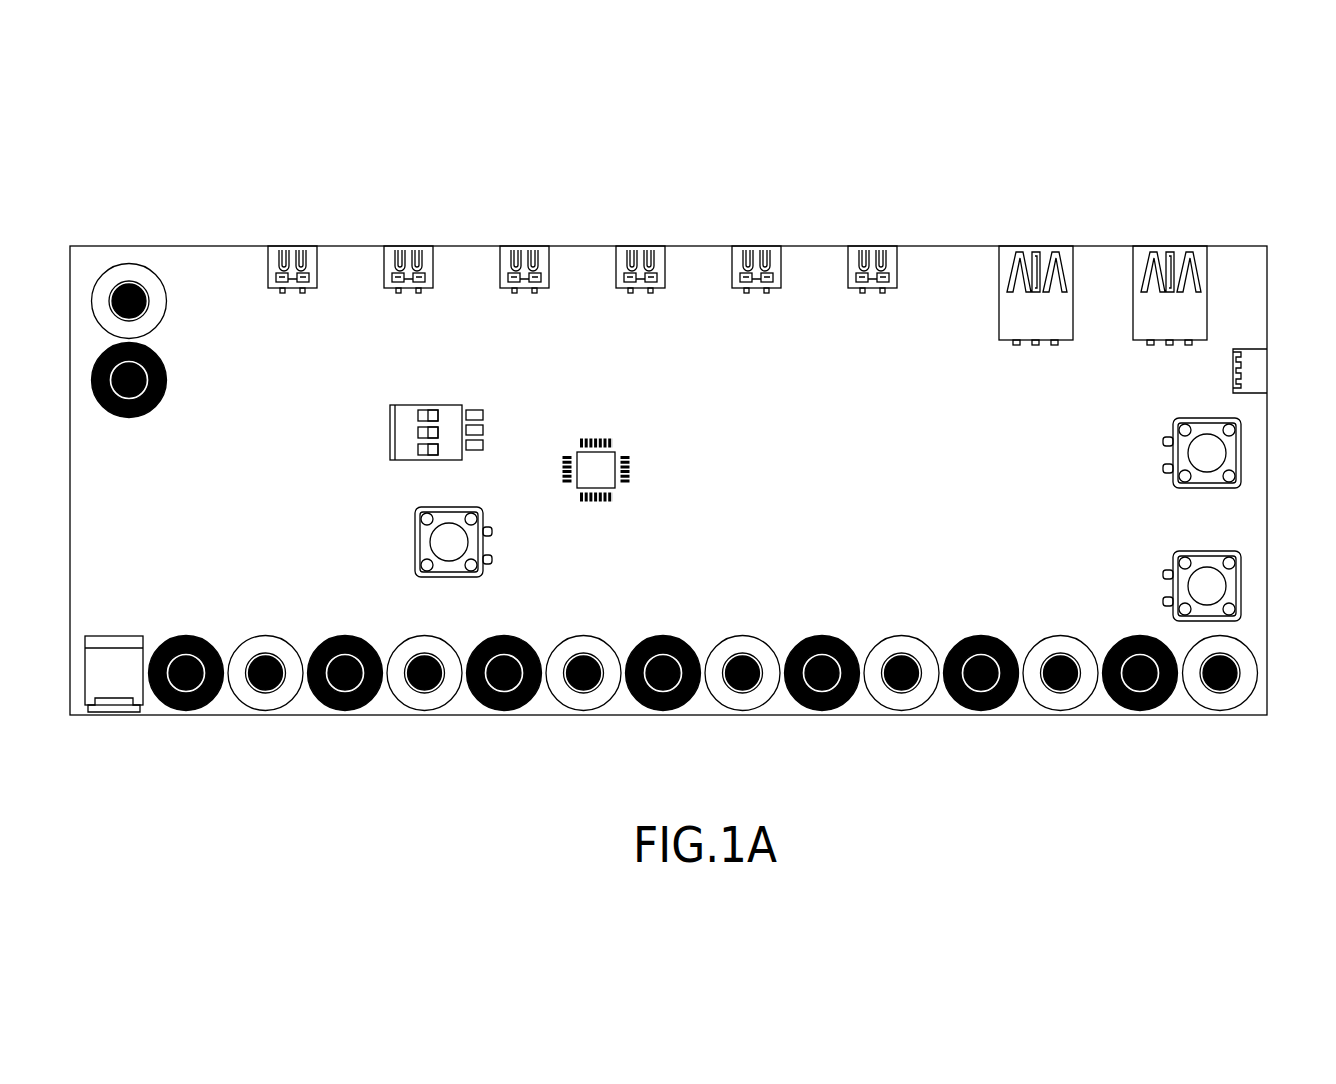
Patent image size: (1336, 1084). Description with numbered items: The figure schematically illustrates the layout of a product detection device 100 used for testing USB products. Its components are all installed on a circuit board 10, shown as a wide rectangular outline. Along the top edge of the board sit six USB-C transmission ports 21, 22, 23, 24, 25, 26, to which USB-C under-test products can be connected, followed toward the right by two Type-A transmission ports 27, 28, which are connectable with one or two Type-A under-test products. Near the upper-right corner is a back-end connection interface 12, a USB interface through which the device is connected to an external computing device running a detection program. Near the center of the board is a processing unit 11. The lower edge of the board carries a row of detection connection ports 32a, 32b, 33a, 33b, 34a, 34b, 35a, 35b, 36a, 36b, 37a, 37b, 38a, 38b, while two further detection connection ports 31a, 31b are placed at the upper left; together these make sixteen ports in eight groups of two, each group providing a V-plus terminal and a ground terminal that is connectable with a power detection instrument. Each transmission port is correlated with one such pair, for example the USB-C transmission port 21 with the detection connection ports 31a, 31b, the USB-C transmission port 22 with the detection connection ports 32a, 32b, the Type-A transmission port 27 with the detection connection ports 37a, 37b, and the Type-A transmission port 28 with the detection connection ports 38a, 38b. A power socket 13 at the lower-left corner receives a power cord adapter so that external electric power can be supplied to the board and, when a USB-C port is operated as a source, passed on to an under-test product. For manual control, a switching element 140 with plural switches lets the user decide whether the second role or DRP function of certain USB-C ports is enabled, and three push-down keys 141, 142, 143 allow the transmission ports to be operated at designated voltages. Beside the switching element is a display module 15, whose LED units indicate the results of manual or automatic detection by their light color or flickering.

The product detection device 100 is at (255, 161).
The circuit board 10 is at (210, 260).
The processing unit 11 is at (595, 462).
The back-end connection interface 12 is at (1256, 386).
The power socket 13 is at (115, 653).
The switching element 140 is at (402, 410).
The display module 15 is at (474, 418).
The key 141 is at (447, 517).
The key 142 is at (1207, 430).
The key 143 is at (1207, 563).
The USB-C transmission port 21 is at (293, 250).
The USB-C transmission port 22 is at (409, 250).
The USB-C transmission port 23 is at (525, 250).
The USB-C transmission port 24 is at (641, 250).
The USB-C transmission port 25 is at (757, 250).
The USB-C transmission port 26 is at (873, 250).
The Type-A transmission port 27 is at (1038, 252).
The Type-A transmission port 28 is at (1172, 252).
The detection connection port 31a is at (162, 378).
The detection connection port 31b is at (162, 302).
The detection connection port 32a is at (213, 699).
The detection connection port 32b is at (292, 699).
The detection connection port 33a is at (372, 699).
The detection connection port 33b is at (451, 699).
The detection connection port 34a is at (531, 699).
The detection connection port 34b is at (610, 699).
The detection connection port 35a is at (690, 699).
The detection connection port 35b is at (769, 699).
The detection connection port 36a is at (849, 699).
The detection connection port 36b is at (928, 699).
The detection connection port 37a is at (1008, 699).
The detection connection port 37b is at (1087, 699).
The detection connection port 38a is at (1167, 699).
The detection connection port 38b is at (1250, 672).